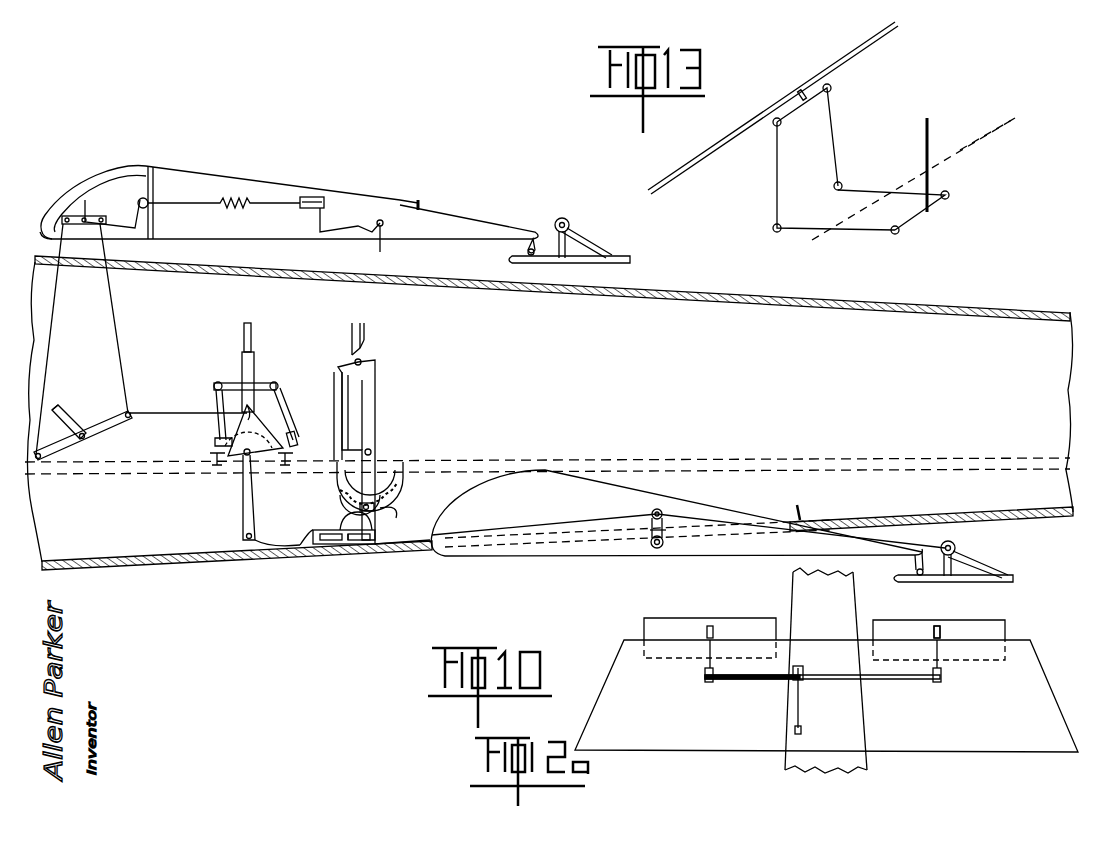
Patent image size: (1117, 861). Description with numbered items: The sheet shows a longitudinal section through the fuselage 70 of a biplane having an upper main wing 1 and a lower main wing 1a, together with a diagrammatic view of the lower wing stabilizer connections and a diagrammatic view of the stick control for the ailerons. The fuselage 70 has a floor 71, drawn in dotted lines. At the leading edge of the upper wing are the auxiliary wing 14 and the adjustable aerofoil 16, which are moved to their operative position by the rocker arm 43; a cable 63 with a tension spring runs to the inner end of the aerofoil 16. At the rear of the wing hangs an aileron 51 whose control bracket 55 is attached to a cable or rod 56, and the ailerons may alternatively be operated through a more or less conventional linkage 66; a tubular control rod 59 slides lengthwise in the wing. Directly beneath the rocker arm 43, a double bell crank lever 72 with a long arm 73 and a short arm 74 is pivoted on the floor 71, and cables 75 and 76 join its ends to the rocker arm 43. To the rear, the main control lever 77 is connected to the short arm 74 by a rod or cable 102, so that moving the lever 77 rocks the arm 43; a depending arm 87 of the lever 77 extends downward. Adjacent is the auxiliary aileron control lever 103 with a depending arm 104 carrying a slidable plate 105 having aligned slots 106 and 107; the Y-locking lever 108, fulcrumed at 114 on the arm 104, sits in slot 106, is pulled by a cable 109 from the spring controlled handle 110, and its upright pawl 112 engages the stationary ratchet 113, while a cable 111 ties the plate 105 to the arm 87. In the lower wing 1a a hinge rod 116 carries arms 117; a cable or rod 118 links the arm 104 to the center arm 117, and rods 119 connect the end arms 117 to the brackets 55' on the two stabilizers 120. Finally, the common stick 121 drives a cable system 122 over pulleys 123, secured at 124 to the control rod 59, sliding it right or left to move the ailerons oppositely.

In FIG. 10, the upper main wing 1 is at (230, 195).
In FIG. 10, the lower main wing 1a is at (618, 556).
In FIG. 12A, the lower main wing 1a is at (980, 745).
In FIG. 10, the auxiliary wing 14 is at (80, 188).
In FIG. 10, the adjustable aerofoil 16 is at (42, 236).
In FIG. 10, the rocker arm 43 is at (90, 214).
In FIG. 10, the ailerons 51 is at (575, 258).
In FIG. 10, the control bracket 55 is at (583, 226).
In FIG. 10, the bracket 55' is at (967, 572).
In FIG. 12A, the bracket 55' is at (969, 617).
In FIG. 10, the cable or rod 56 is at (494, 205).
In FIG. 13, the tubular control rod 59 is at (708, 155).
In FIG. 10, the cable 63 is at (182, 208).
In FIG. 10, the linkage 66 is at (340, 230).
In FIG. 12A, the fuselage 70 is at (870, 768).
In FIG. 13, the fuselage 70 is at (778, 290).
In FIG. 10, the floor 71 is at (662, 462).
In FIG. 13, the floor 71 is at (980, 142).
In FIG. 10, the double bell crank lever 72 is at (56, 405).
In FIG. 10, the long arm 73 is at (105, 433).
In FIG. 10, the short arm 74 is at (76, 408).
In FIG. 10, the cable 75 is at (55, 326).
In FIG. 10, the cable 76 is at (118, 312).
In FIG. 10, the main control lever 77 is at (252, 340).
In FIG. 10, the depending arm 87 is at (240, 505).
In FIG. 10, the rod or cable 102 is at (158, 408).
In FIG. 10, the auxiliary aileron control lever 103 is at (372, 378).
In FIG. 12A, the auxiliary aileron control lever 103 is at (793, 728).
In FIG. 10, the depending arm 104 is at (345, 485).
In FIG. 10, the plate 105 is at (306, 548).
In FIG. 10, the slot 106 is at (336, 548).
In FIG. 10, the slot 107 is at (362, 548).
In FIG. 10, the Y-locking lever 108 is at (340, 512).
In FIG. 10, the cable 109 is at (336, 440).
In FIG. 10, the spring controlled handle 110 is at (350, 340).
In FIG. 10, the cable 111 is at (258, 550).
In FIG. 10, the upright pawl 112 is at (380, 507).
In FIG. 10, the stationary ratchet 113 is at (393, 458).
In FIG. 10, the fulcrum 114 is at (408, 556).
In FIG. 10, the hinge rod 116 is at (665, 550).
In FIG. 12A, the hinge rod 116 is at (895, 685).
In FIG. 10, the arms 117 is at (668, 545).
In FIG. 12A, the arms 117 is at (705, 676).
In FIG. 10, the cable or rod 118 is at (498, 530).
In FIG. 12A, the cable or rod 118 is at (803, 700).
In FIG. 10, the cables or rods 119 is at (718, 516).
In FIG. 12A, the cables or rods 119 is at (950, 658).
In FIG. 10, the stabilizers 120 is at (938, 585).
In FIG. 12A, the stabilizers 120 is at (645, 630).
In FIG. 13, the common stick 121 is at (915, 138).
In FIG. 13, the cable system 122 is at (910, 230).
In FIG. 13, the pulleys 123 is at (780, 124).
In FIG. 13, the securing point 124 is at (800, 92).